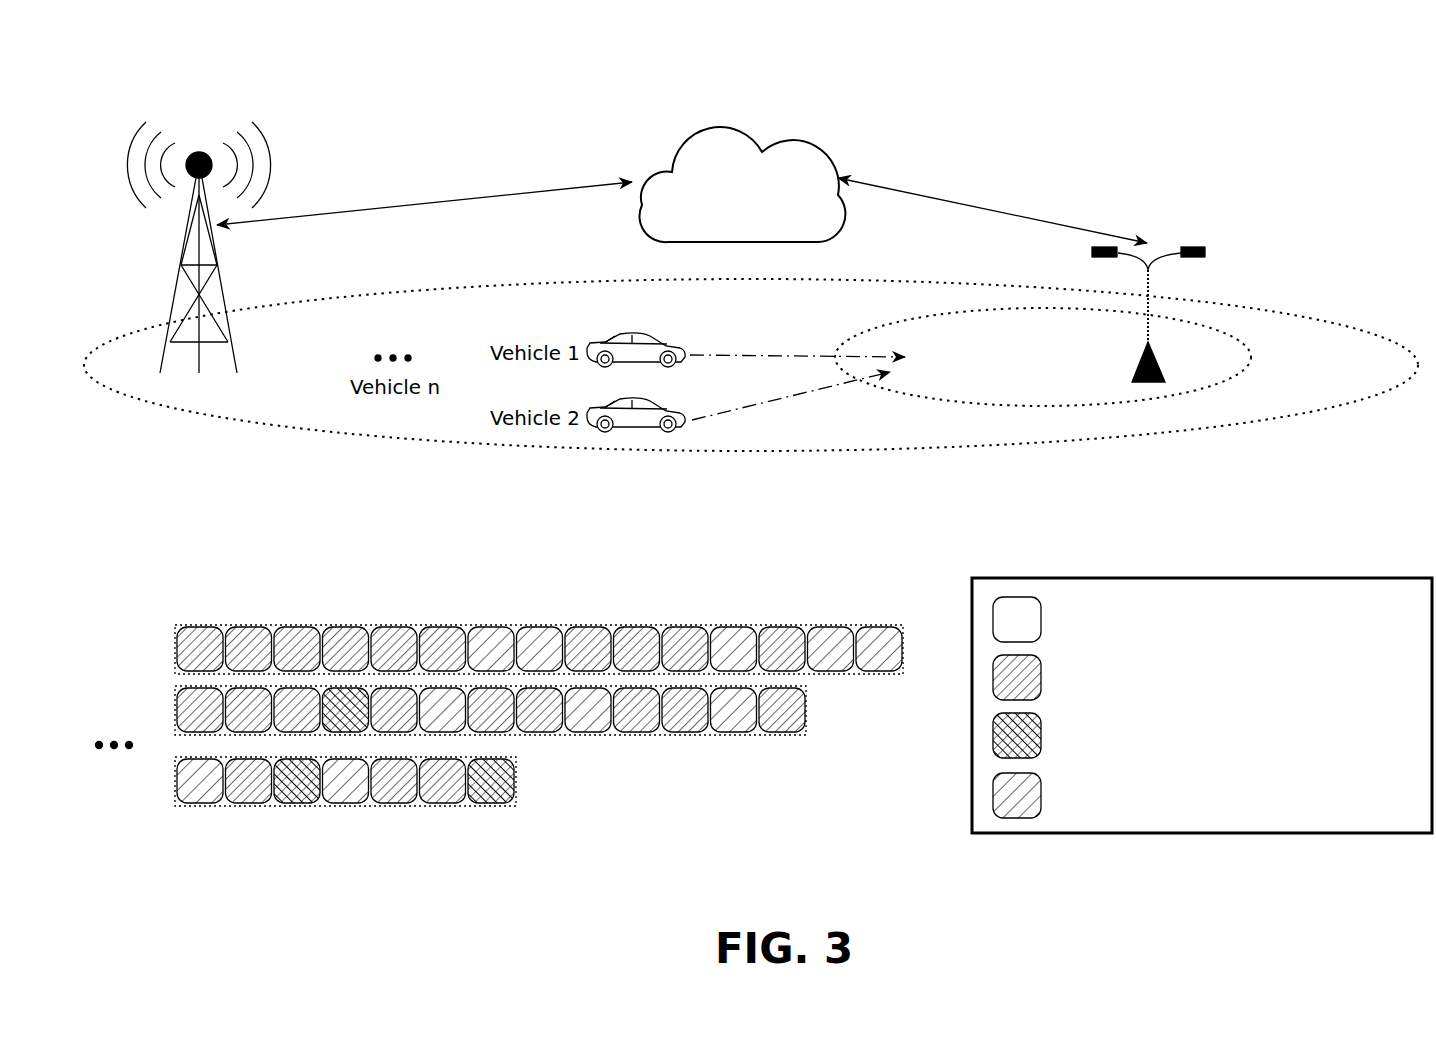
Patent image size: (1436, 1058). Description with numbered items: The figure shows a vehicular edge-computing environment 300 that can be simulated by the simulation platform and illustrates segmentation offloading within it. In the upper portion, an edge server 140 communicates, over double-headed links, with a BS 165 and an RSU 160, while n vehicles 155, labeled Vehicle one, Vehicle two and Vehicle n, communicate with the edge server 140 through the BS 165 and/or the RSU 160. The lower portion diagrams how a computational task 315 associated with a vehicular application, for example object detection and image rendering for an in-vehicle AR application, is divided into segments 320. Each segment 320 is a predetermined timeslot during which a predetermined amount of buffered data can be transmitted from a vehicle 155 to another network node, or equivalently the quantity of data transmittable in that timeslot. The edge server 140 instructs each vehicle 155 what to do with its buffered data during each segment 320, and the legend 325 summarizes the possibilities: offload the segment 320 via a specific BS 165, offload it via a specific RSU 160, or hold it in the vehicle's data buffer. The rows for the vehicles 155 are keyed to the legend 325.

The vehicular edge-computing environment 300 is at (766, 94).
The edge server 140 is at (801, 150).
The BS 165 is at (225, 319).
The vehicle 155 is at (665, 342).
The RSU 160 is at (1147, 313).
The computational task 315 is at (903, 618).
The segment 320 is at (900, 678).
The legend 325 is at (1247, 554).